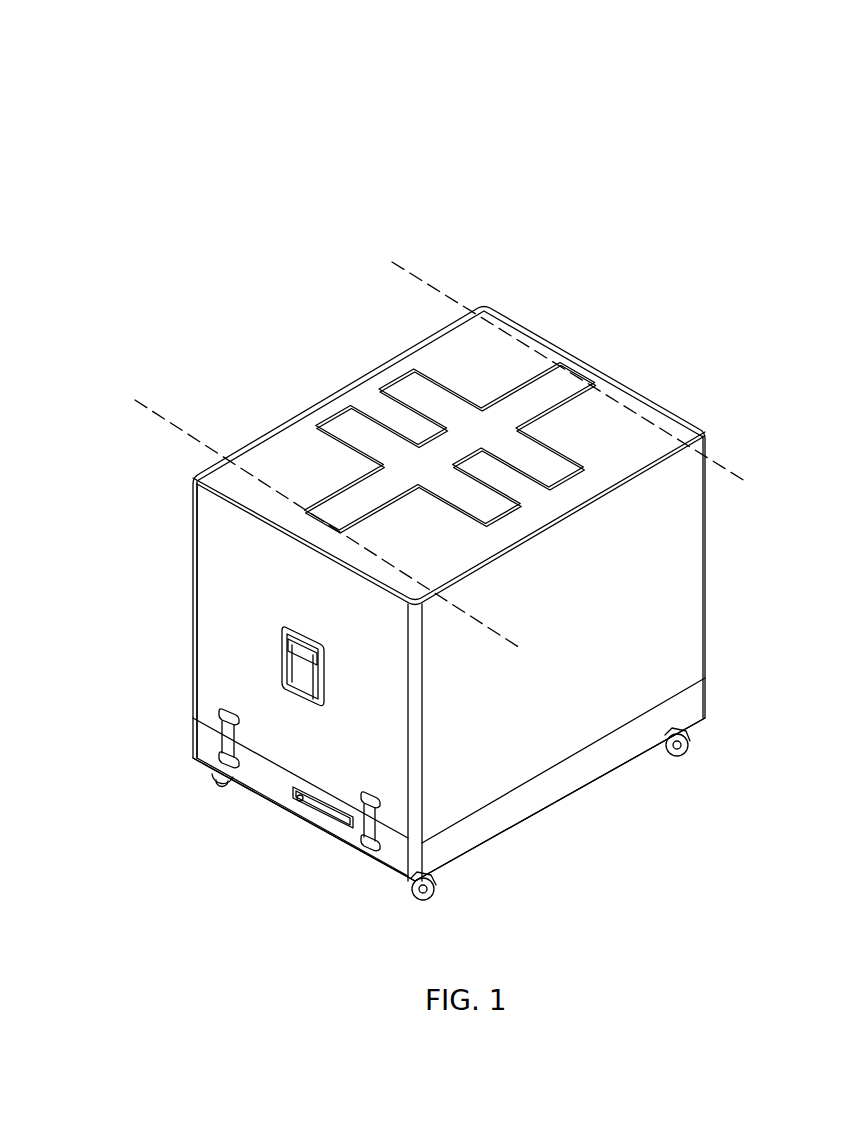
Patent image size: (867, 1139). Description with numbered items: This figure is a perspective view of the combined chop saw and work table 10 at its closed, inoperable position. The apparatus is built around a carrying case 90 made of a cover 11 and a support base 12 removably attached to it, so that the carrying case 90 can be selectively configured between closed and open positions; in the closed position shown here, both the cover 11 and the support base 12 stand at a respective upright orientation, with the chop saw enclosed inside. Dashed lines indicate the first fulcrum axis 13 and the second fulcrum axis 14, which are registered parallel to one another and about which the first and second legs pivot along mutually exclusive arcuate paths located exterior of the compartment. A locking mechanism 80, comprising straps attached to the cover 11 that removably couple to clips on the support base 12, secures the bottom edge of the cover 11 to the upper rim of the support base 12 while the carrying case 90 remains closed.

The combined chop saw and work table 10 is at (541, 100).
The carrying case 90 is at (272, 305).
The second fulcrum axis 14 is at (457, 305).
The first fulcrum axis 13 is at (165, 428).
The cover 11 is at (182, 598).
The support base 12 is at (253, 805).
The locking mechanism 80 is at (200, 742).